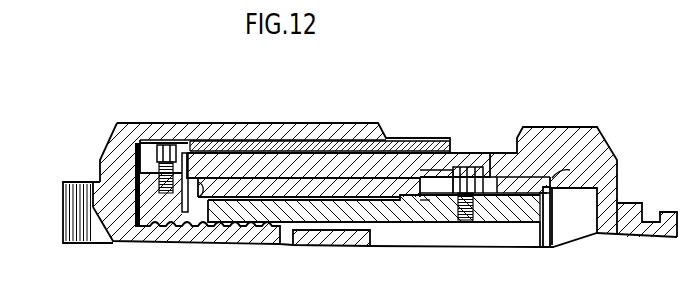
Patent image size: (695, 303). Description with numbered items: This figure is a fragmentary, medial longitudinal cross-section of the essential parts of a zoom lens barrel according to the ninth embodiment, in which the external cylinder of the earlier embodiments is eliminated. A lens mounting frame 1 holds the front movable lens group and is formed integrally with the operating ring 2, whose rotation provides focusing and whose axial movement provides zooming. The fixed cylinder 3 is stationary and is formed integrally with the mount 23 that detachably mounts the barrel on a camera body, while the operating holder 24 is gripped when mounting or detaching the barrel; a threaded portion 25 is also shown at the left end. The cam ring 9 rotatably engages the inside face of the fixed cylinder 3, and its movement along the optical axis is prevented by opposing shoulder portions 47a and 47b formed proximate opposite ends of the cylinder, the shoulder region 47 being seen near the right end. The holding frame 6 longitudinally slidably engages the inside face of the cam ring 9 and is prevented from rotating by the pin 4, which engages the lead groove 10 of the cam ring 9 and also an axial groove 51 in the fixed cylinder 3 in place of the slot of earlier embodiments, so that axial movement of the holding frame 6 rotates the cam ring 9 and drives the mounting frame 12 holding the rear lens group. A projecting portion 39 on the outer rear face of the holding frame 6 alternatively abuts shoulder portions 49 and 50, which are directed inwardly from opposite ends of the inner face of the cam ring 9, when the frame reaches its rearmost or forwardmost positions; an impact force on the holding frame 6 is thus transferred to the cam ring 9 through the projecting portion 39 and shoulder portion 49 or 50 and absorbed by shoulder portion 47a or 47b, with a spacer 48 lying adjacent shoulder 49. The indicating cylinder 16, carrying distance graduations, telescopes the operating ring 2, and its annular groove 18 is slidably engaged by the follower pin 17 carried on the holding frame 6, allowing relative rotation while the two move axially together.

The lens mounting frame 1 is at (197, 233).
The operating ring 2 is at (272, 137).
The fixed cylinder 3 is at (347, 160).
The pin 4 is at (472, 170).
The holding frame 6 is at (393, 218).
The cam ring 9 is at (295, 193).
The lead groove 10 is at (422, 183).
The mounting frame 12 is at (318, 243).
The indicating cylinder 16 is at (393, 142).
The follower pin 17 is at (167, 143).
The annular groove 18 is at (143, 147).
The mount 23 is at (655, 217).
The operating holder 24 is at (563, 132).
The threaded portion 25 is at (83, 181).
The projecting portion 39 is at (425, 200).
The detent member 47 is at (503, 183).
The shoulder portion 47a is at (552, 178).
The shoulder portion 47b is at (205, 200).
The spacer 48 is at (513, 193).
The shoulder portion 49 is at (536, 200).
The shoulder portion 50 is at (208, 203).
The axial groove 51 is at (443, 167).